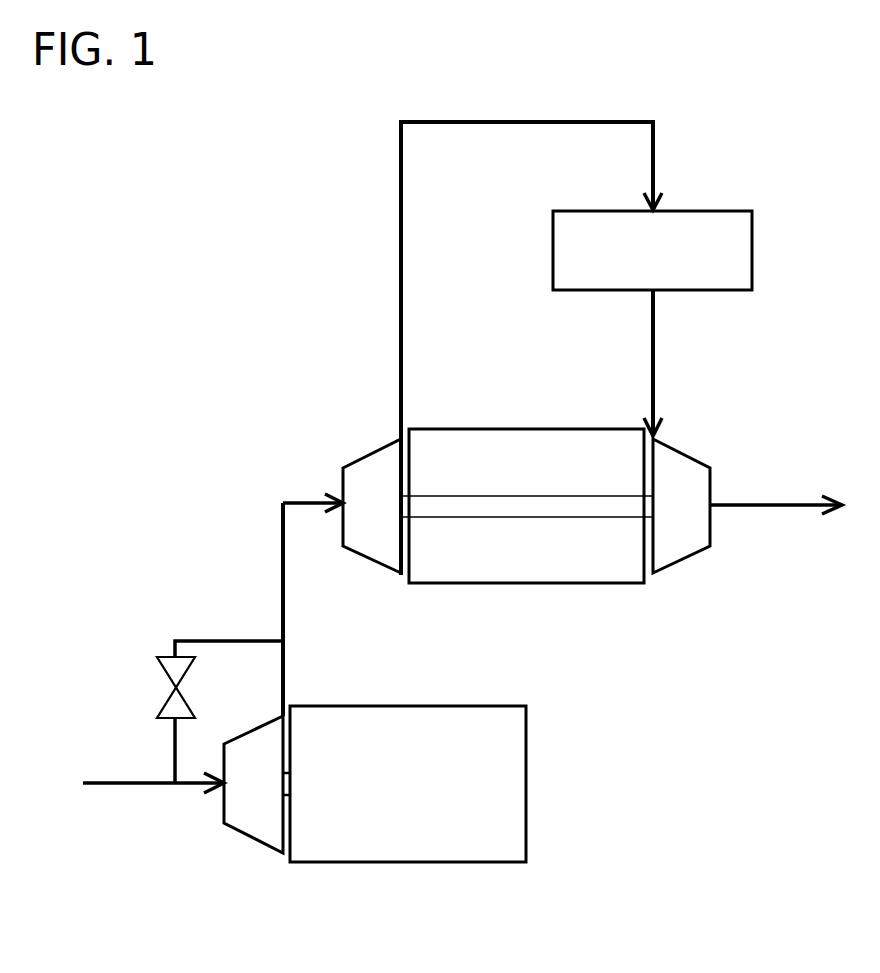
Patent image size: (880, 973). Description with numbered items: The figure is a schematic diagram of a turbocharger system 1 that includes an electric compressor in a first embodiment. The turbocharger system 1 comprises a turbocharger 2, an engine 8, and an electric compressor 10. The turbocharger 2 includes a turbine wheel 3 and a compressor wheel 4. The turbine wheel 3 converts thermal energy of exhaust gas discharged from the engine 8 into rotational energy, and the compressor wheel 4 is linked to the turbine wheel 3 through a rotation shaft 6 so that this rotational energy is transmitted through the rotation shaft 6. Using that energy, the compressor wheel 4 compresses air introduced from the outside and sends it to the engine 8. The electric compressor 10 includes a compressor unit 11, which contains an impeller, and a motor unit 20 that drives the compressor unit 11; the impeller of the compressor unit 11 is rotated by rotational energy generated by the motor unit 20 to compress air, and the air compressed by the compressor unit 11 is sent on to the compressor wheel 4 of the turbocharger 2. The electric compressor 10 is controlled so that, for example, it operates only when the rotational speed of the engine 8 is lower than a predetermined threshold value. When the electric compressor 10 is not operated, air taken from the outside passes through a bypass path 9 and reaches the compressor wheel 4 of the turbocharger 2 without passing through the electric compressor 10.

The turbocharger system 1 is at (278, 313).
The turbocharger 2 is at (550, 413).
The turbine wheel 3 is at (677, 451).
The compressor wheel 4 is at (380, 449).
The rotation shaft 6 is at (499, 496).
The engine 8 is at (705, 211).
The bypass path 9 is at (220, 640).
The electric compressor 10 is at (455, 692).
The compressor unit 11 is at (262, 843).
The motor unit 20 is at (361, 777).